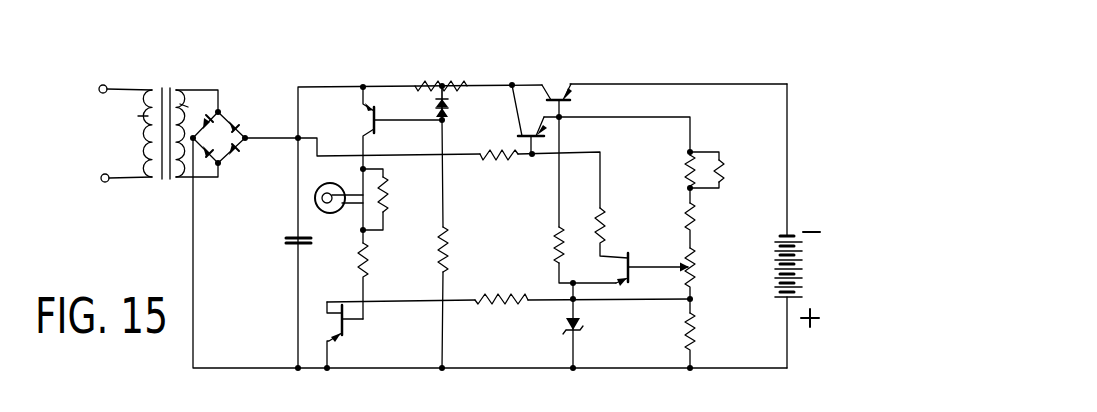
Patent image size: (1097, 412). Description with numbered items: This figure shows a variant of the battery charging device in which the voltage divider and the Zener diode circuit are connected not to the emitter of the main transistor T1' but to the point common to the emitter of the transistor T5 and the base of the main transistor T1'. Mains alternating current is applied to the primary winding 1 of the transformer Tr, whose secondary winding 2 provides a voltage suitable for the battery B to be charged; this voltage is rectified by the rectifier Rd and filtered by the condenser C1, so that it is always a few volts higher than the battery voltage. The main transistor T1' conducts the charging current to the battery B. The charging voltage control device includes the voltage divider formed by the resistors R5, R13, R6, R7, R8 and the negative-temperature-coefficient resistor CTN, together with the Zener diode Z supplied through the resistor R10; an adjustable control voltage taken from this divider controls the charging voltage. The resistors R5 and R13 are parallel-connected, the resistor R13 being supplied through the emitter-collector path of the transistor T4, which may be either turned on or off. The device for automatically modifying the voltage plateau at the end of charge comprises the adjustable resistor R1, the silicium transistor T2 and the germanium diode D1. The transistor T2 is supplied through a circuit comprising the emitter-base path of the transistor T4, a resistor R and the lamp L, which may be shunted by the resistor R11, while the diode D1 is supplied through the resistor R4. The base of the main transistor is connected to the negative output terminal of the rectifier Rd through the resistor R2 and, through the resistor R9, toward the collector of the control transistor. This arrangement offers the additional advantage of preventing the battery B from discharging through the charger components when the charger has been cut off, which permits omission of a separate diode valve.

The transformer Tr is at (168, 87).
The primary winding 1 is at (138, 116).
The secondary winding 2 is at (189, 105).
The rectifier Rd is at (243, 108).
The condenser C1 is at (293, 235).
The silicium transistor T2 is at (360, 118).
The germanium diode D1 is at (438, 110).
The adjustable resistor R1 is at (442, 82).
The transistor T5 is at (512, 126).
The main transistor T1' is at (616, 94).
The resistor R11 is at (388, 190).
The lamp L is at (341, 214).
The resistor R is at (370, 256).
The resistor R4 is at (448, 250).
The resistor R2 is at (508, 160).
The transistor T4 is at (337, 340).
The resistor R13 is at (528, 303).
The resistor R10 is at (558, 240).
The resistor R9 is at (604, 229).
The Zener diode Z is at (580, 326).
The resistor R8 is at (688, 169).
The resistor with negative temperature coefficient CTN is at (723, 178).
The resistor R7 is at (695, 215).
The resistor R6 is at (696, 280).
The resistor R5 is at (695, 329).
The battery B is at (796, 282).